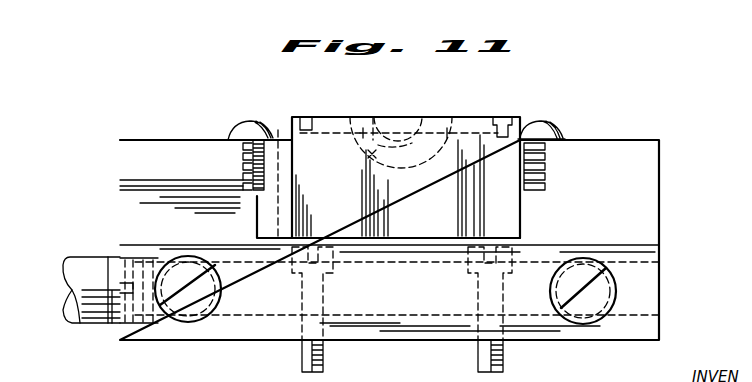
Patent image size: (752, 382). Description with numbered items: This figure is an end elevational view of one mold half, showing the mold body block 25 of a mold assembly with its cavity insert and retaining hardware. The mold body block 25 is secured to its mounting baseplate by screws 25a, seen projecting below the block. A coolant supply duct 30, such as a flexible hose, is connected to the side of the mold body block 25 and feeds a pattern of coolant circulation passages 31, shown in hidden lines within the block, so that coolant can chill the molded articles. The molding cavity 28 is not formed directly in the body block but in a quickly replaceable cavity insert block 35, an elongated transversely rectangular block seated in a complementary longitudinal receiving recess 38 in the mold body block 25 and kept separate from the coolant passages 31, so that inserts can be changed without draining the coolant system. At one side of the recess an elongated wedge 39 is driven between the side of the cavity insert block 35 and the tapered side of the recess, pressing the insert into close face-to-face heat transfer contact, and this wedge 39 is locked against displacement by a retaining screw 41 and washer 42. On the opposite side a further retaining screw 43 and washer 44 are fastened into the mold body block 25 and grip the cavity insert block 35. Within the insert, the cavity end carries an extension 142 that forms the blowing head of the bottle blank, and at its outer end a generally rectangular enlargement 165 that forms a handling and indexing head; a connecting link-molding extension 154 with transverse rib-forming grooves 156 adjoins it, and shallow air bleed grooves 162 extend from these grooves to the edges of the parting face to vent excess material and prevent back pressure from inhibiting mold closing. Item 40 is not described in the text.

The mold body block 25 is at (145, 148).
The screws 25a is at (437, 378).
The molding cavity 28 is at (382, 166).
The coolant supply duct 30 is at (78, 263).
The coolant circulation passages 31 is at (270, 312).
The cavity insert block 35 is at (313, 148).
The receiving recess 38 is at (519, 223).
The wedge 39 is at (282, 140).
The shoulder 40 is at (262, 204).
The retaining screw 41 is at (238, 125).
The washer 42 is at (233, 133).
The retaining screw 43 is at (549, 122).
The washer 44 is at (563, 135).
The extension 142 is at (436, 115).
The connecting link-molding extension 154 is at (409, 115).
The rib-forming grooves 156 is at (388, 110).
The air bleed grooves 162 is at (306, 117).
The enlargement 165 is at (372, 156).